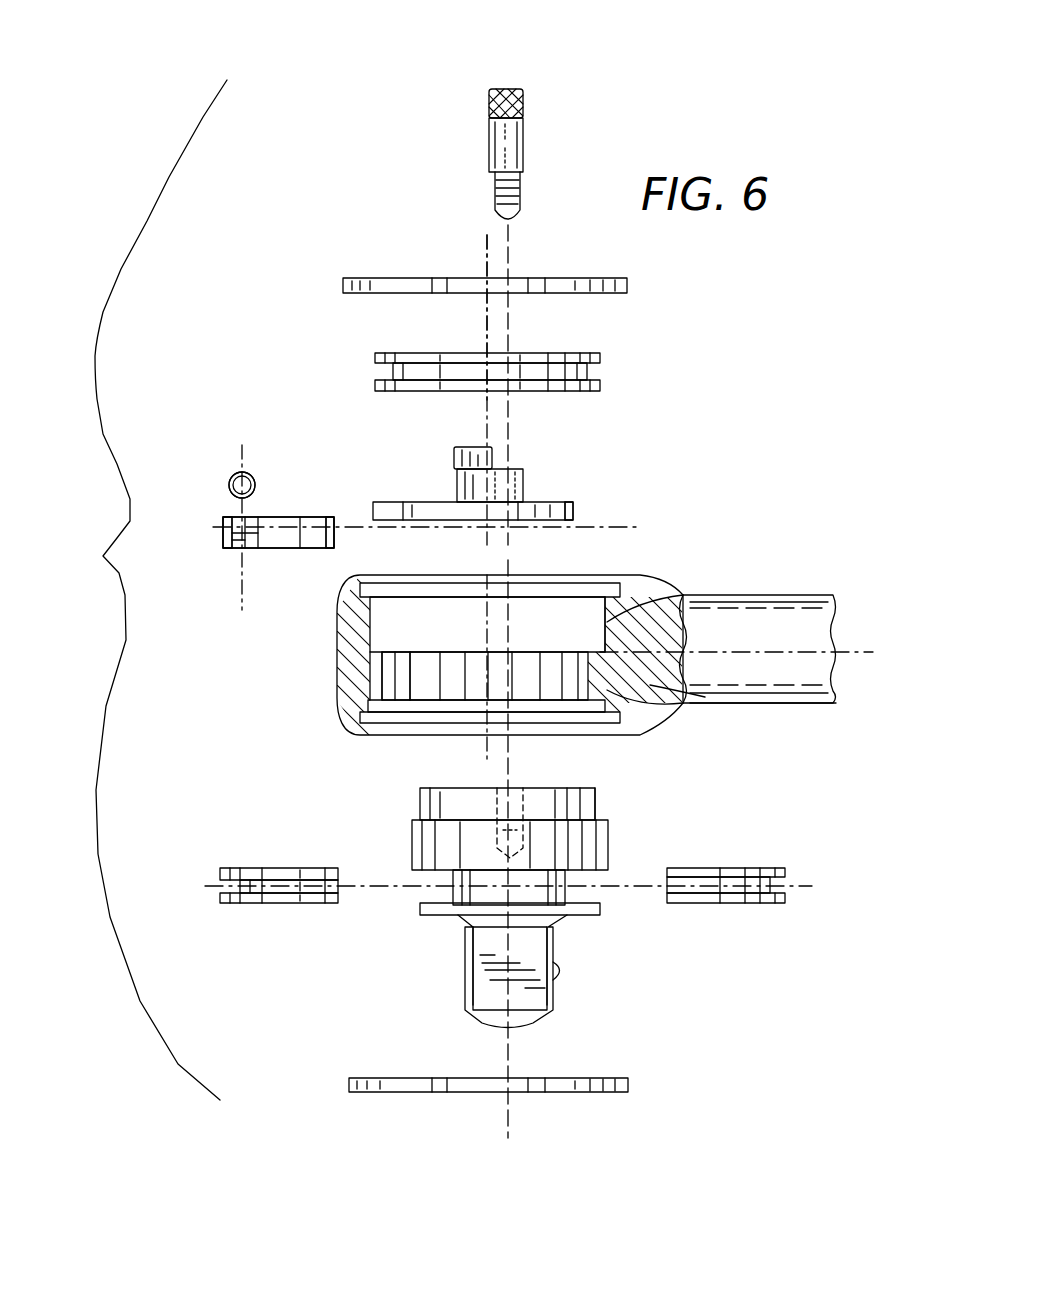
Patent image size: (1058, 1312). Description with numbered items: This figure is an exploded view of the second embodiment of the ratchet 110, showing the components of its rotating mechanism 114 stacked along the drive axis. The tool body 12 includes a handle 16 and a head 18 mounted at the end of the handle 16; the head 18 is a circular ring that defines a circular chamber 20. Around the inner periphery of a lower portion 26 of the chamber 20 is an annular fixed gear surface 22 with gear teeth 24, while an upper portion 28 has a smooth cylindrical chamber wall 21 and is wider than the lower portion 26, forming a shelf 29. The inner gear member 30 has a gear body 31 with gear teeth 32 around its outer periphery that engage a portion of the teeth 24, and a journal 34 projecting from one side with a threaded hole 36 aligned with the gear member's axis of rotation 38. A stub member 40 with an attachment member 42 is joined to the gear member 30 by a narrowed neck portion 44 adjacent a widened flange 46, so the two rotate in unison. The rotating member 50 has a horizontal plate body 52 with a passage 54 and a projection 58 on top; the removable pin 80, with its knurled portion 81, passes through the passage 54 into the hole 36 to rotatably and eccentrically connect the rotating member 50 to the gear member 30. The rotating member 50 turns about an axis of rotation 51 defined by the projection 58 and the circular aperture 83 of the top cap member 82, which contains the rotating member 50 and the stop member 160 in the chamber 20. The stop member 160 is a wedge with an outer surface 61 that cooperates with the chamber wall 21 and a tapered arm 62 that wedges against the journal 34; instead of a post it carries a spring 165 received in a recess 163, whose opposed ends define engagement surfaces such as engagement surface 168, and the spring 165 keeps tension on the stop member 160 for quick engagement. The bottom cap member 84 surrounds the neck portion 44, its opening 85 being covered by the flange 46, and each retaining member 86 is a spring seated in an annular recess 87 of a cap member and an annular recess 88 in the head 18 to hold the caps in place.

The tool body 12 is at (790, 718).
The handle 16 is at (858, 598).
The head 18 is at (690, 705).
The circular chamber 20 is at (492, 614).
The cylindrical chamber wall 21 is at (665, 605).
The annular fixed gear surface 22 is at (375, 683).
The gear teeth 24 is at (420, 690).
The lower portion 26 is at (448, 692).
The upper portion 28 is at (422, 600).
The shelf 29 is at (590, 600).
The inner gear member 30 is at (512, 805).
The gear body 31 is at (412, 835).
The gear teeth 32 is at (575, 845).
The journal 34 is at (600, 803).
The hole 36 is at (522, 796).
The axis of rotation 38 is at (520, 232).
The stub member 40 is at (499, 971).
The attachment member 42 is at (465, 975).
The neck portion 44 is at (452, 890).
The flange 46 is at (600, 908).
The rotating member 50 is at (573, 503).
The axis of rotation 51 is at (482, 252).
The plate body 52 is at (573, 515).
The passage 54 is at (525, 462).
The projection 58 is at (457, 476).
The outer surface 61 is at (223, 530).
The tapered arm 62 is at (330, 517).
The removable pin 80 is at (504, 124).
The knurled portion 81 is at (523, 104).
The top cap member 82 is at (430, 353).
The circular aperture 83 is at (598, 326).
The bottom cap member 84 is at (252, 868).
The opening 85 is at (338, 870).
The retaining member 86 is at (365, 278).
The annular recess 87 is at (393, 372).
The annular recess 88 is at (622, 592).
The ratchet 110 is at (832, 414).
The rotating mechanism 114 is at (129, 590).
The stop member 160 is at (283, 550).
The recess 163 is at (228, 515).
The spring 165 is at (250, 472).
The engagement surface 168 is at (233, 478).